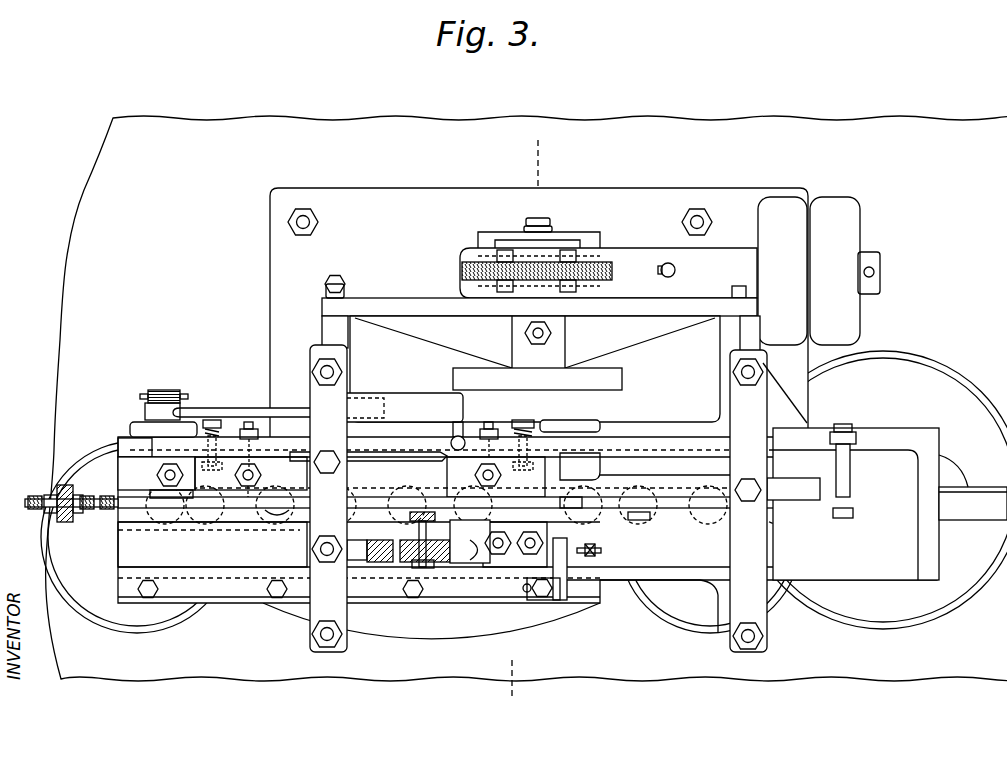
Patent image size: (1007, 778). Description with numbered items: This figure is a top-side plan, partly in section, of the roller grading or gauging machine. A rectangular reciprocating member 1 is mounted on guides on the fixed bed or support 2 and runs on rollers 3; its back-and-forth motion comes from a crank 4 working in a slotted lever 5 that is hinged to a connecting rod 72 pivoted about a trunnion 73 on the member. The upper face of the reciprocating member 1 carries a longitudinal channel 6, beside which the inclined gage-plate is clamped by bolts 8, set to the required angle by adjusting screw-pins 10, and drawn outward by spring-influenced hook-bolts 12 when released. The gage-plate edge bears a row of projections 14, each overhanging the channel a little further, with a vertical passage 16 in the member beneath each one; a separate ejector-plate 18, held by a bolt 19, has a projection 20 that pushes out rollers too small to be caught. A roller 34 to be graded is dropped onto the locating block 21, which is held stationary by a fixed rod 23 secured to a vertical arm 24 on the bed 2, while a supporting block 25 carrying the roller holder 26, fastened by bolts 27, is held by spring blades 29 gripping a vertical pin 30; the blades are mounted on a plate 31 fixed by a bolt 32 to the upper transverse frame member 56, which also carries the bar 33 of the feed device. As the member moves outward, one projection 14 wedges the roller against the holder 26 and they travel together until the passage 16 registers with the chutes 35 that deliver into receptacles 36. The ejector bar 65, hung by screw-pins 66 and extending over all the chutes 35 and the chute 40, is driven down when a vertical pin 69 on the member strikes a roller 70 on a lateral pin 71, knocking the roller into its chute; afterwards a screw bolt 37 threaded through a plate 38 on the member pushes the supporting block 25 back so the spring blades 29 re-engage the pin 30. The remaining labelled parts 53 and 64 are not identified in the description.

The reciprocating member 1 is at (118, 564).
The fixed bed or support 2 is at (910, 467).
The rollers 3 is at (135, 430).
The crank 4 is at (537, 416).
The slotted lever 5 is at (402, 406).
The longitudinal trough or channel 6 is at (226, 562).
The bolts 8 is at (248, 488).
The adjusting bolts or screw-pins 10 is at (246, 422).
The spring influenced hook-bolts 12 is at (210, 420).
The projections 14 is at (208, 499).
The vertical hole or passage 16 is at (279, 512).
The ejector-plate 18 is at (125, 457).
The bolt 19 is at (157, 477).
The projection 20 is at (170, 500).
The locating block 21 is at (443, 498).
The fixed rod 23 is at (110, 508).
The vertical arm 24 is at (63, 485).
The supporting block 25 is at (565, 530).
The roller holder 26 is at (500, 557).
The bolts 27 is at (530, 557).
The spring blades 29 is at (410, 568).
The vertical pin 30 is at (463, 548).
The plate 31 is at (357, 548).
The bolt 32 is at (312, 552).
The bar 33 is at (612, 477).
The roller 34 is at (603, 473).
The chutes 35 is at (816, 469).
The receptacle 36 is at (847, 592).
The screw bolt 37 is at (604, 550).
The plate 38 is at (618, 600).
The chute 40 is at (969, 500).
The wheel 53 is at (80, 588).
The upper transverse frame member 56 is at (314, 368).
The bracket 64 is at (566, 590).
The ejector bar 65 is at (877, 512).
The screw-pins 66 is at (637, 521).
The vertical pin 69 is at (458, 436).
The roller 70 is at (853, 437).
The lateral pin 71 is at (846, 468).
The connecting rod 72 is at (237, 408).
The trunnion 73 is at (150, 390).